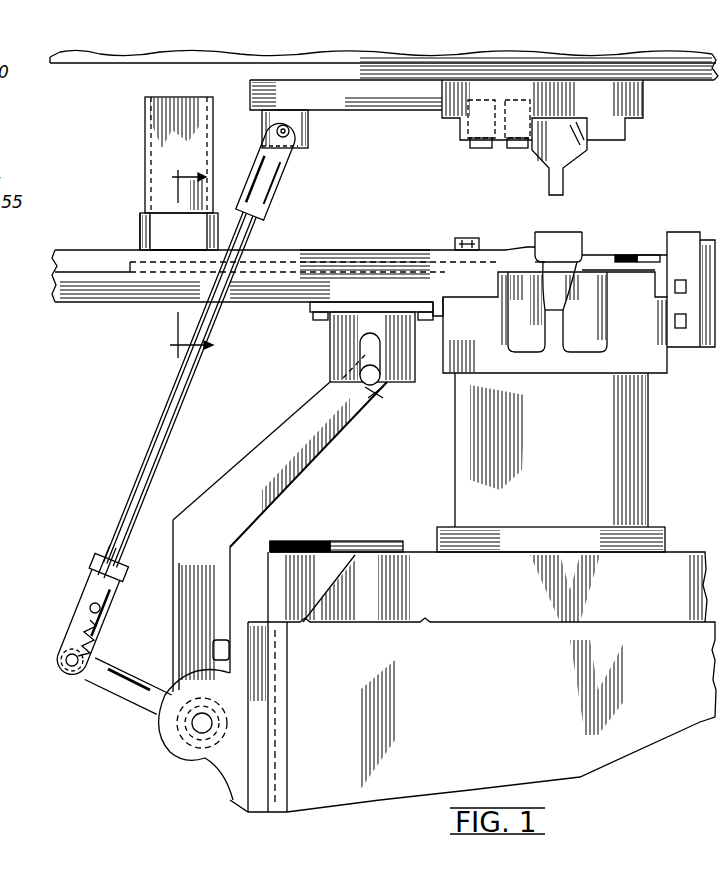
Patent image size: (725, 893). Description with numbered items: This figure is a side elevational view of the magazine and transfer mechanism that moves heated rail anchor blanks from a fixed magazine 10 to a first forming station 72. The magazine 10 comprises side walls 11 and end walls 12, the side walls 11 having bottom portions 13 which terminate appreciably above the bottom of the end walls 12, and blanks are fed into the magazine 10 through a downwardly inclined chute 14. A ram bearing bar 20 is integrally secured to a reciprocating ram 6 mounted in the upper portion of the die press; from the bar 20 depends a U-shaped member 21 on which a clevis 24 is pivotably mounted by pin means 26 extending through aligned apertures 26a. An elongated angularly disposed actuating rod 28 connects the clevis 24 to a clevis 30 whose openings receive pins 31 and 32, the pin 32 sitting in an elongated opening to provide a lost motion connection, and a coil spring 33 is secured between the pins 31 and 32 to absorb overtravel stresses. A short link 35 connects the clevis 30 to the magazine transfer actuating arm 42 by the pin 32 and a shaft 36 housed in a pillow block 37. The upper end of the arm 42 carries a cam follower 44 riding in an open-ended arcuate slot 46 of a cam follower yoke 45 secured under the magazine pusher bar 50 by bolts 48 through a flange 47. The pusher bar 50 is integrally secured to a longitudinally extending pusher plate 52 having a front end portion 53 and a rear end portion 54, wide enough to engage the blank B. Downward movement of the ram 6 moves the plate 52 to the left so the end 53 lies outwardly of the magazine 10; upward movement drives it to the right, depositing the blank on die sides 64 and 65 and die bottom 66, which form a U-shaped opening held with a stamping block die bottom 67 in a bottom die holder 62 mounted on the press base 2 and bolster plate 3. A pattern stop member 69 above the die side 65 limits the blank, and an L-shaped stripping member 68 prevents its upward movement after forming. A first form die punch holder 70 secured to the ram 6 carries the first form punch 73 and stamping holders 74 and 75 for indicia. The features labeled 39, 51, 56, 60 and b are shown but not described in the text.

The base 2 is at (473, 682).
The bolster plate 3 is at (684, 560).
The reciprocating ram 6 is at (127, 64).
The fixed magazine 10 is at (135, 228).
The side walls 11 is at (140, 241).
The end walls 12 is at (179, 231).
The bottom portions 13 is at (315, 261).
The downwardly inclined chute 14 is at (143, 148).
The ram bearing bar 20 is at (377, 111).
The U-shaped member 21 is at (310, 114).
The clevis 24 is at (283, 185).
The pin means 26 is at (288, 136).
The aligned apertures 26a is at (301, 110).
The actuating rod 28 is at (200, 380).
The clevis 30 is at (84, 578).
The pin 31 is at (89, 607).
The pin 32 is at (66, 664).
The coil spring 33 is at (80, 632).
The link 35 is at (100, 692).
The shaft 36 is at (206, 716).
The pillow block 37 is at (192, 760).
The stop 39 is at (220, 640).
The magazine transfer actuating arm 42 is at (222, 490).
The cam follower 44 is at (377, 396).
The cam follower yoke 45 is at (330, 382).
The arcuate slot 46 is at (375, 340).
The flange 47 is at (310, 308).
The bolts 48 is at (320, 322).
The magazine pusher bar 50 is at (78, 296).
The bar lower portion 51 is at (162, 276).
The pusher plate 52 is at (375, 268).
The front end portion 53 is at (468, 250).
The rear end portion 54 is at (128, 262).
The bar top surface 56 is at (313, 258).
The cup member 60 is at (594, 246).
The bottom die holder 62 is at (650, 420).
The first form die side 64 is at (521, 312).
The first form die side 65 is at (585, 312).
The first die bottom 66 is at (553, 350).
The stamping block die bottom 67 is at (470, 296).
The stripping member 68 is at (672, 242).
The pattern stop member 69 is at (594, 262).
The first form die punch holder 70 is at (648, 105).
The first forming station 72 is at (572, 212).
The first form punch 73 is at (570, 187).
The stamping holder 74 is at (485, 150).
The stamping holder 75 is at (516, 150).
The section line b is at (197, 265).
The blank B is at (496, 256).